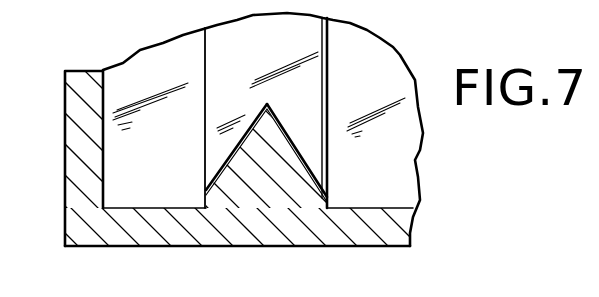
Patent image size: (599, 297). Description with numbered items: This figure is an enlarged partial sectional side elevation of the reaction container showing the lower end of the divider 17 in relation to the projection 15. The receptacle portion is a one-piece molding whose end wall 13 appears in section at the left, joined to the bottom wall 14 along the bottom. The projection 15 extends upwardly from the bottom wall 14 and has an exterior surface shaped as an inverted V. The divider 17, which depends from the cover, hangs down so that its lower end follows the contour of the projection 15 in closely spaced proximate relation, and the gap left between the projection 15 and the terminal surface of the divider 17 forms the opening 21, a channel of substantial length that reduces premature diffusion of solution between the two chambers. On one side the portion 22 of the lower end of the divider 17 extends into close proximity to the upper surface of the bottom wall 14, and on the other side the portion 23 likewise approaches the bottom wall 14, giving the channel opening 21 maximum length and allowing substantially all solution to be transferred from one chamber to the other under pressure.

The end wall 13 is at (72, 162).
The bottom wall 14 is at (340, 227).
The projection 15 is at (267, 147).
The divider 17 is at (330, 90).
The opening 21 is at (318, 112).
The portion of the lower end of the divider 22 is at (218, 162).
The portion of the lower end of the divider 23 is at (318, 160).